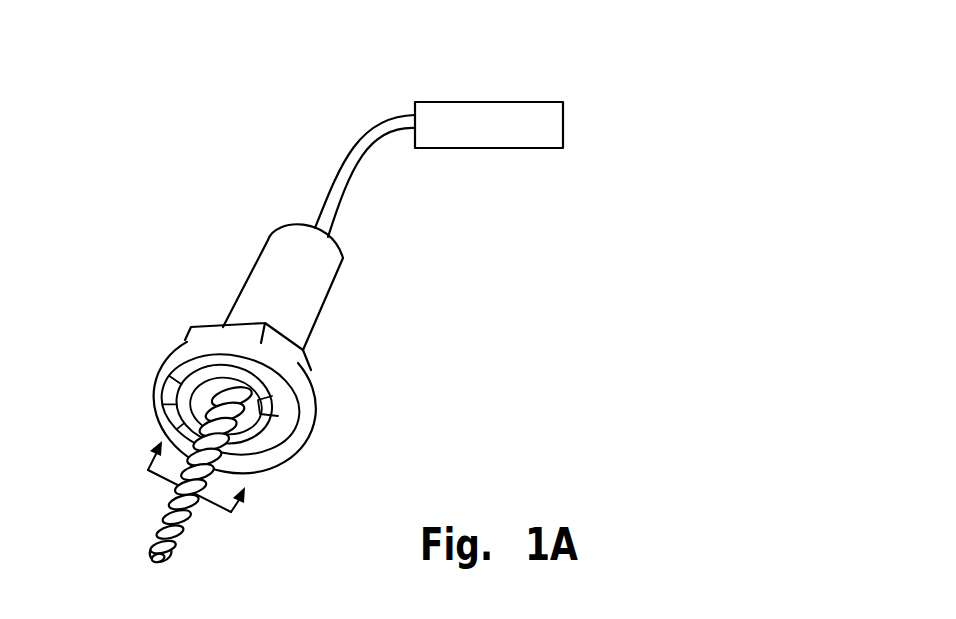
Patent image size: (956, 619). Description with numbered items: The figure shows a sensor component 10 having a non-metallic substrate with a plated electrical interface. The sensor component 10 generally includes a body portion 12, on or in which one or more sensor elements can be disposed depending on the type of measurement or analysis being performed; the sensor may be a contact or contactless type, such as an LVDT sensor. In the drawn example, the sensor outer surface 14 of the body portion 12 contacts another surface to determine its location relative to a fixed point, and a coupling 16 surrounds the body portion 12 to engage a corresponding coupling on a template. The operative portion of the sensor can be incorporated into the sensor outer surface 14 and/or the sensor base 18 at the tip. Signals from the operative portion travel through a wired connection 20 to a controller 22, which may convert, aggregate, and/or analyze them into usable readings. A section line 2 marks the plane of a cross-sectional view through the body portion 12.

The sensor component 10 is at (598, 76).
The body portion 12 is at (122, 520).
The sensor outer surface 14 is at (242, 474).
The coupling 16 is at (206, 251).
The sensor base 18 is at (153, 563).
The wired connection 20 is at (364, 135).
The controller 22 is at (488, 101).
The section line 2- 2 is at (193, 483).